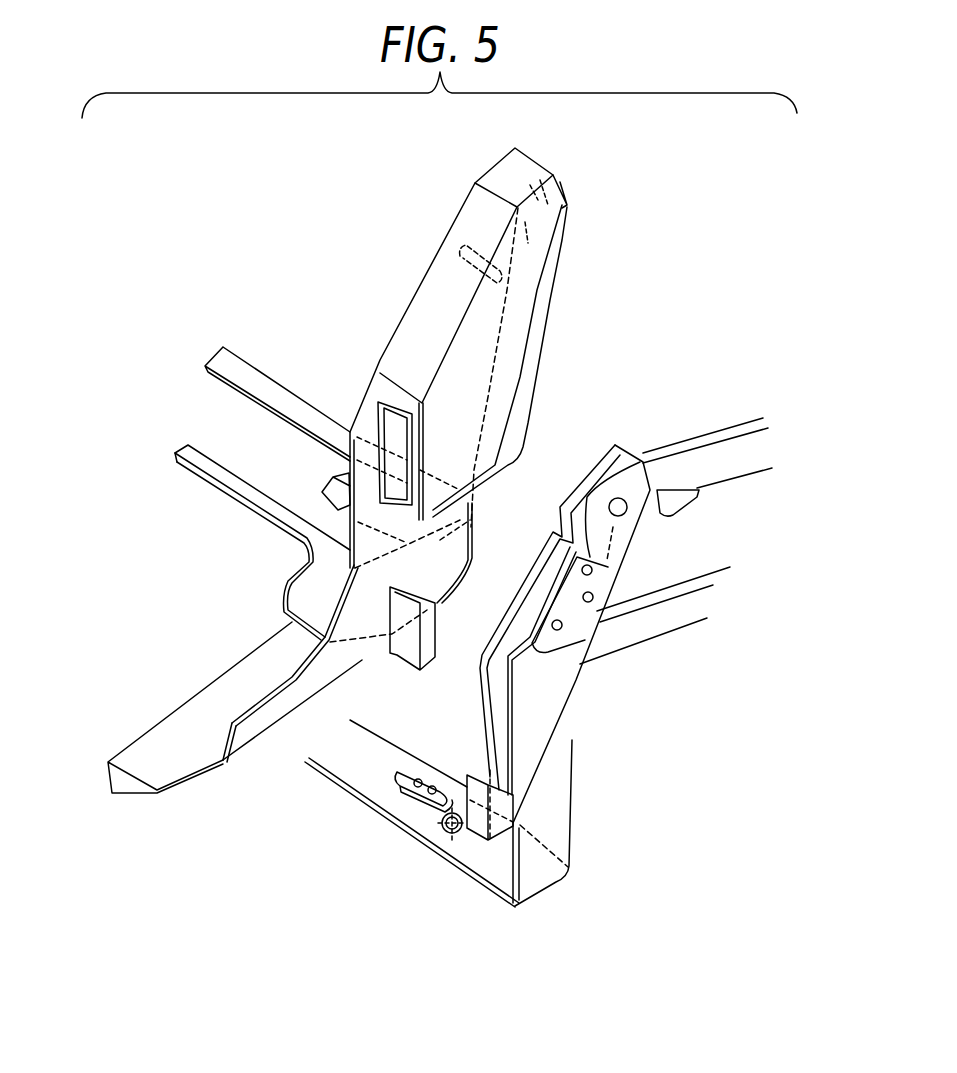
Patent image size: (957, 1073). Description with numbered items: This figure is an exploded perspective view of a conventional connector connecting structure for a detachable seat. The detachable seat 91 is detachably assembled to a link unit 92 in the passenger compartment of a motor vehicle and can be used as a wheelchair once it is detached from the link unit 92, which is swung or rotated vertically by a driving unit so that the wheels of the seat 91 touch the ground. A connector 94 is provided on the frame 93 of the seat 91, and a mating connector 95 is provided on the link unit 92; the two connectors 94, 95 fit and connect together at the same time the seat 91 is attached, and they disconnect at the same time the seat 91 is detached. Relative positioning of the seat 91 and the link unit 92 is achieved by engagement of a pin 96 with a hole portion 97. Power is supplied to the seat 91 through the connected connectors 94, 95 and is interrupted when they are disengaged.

The detachable seat 91 is at (563, 321).
The link unit 92 is at (653, 662).
The frame 93 is at (285, 385).
The connector 94 is at (335, 503).
The connector 95 is at (407, 783).
The pin 96 is at (352, 571).
The hole portion 97 is at (456, 815).